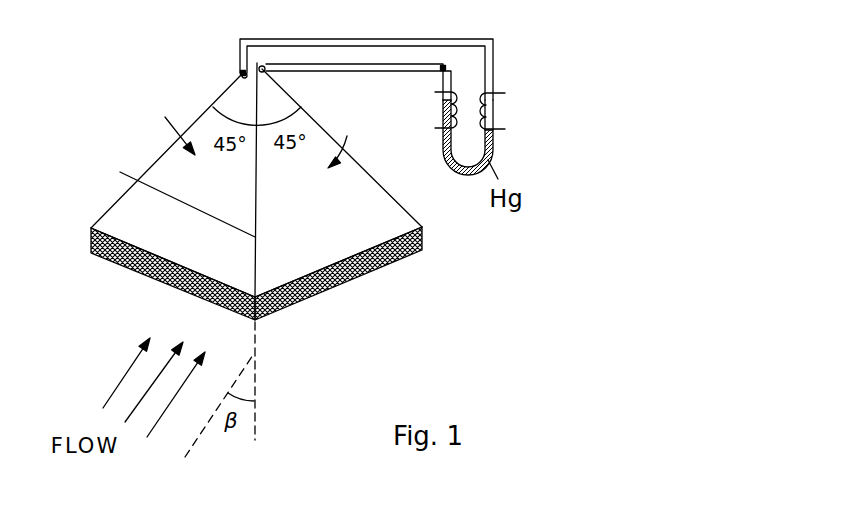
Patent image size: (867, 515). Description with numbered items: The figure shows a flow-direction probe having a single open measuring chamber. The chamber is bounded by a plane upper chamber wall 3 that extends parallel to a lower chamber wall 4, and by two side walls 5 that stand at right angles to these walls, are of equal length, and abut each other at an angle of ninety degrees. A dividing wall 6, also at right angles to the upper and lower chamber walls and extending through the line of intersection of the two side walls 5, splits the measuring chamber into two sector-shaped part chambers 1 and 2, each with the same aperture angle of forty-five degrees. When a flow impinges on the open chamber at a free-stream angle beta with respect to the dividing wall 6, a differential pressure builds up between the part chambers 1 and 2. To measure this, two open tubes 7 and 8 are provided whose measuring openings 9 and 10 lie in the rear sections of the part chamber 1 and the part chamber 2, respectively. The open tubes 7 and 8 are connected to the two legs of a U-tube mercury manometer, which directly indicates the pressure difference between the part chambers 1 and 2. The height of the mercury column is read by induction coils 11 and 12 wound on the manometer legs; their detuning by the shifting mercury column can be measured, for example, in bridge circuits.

The part chamber 1 is at (171, 120).
The part chamber 2 is at (342, 138).
The upper chamber wall 3 is at (168, 167).
The lower chamber wall 4 is at (378, 268).
The side walls 5 is at (90, 240).
The dividing wall 6 is at (179, 190).
The open tube 7 is at (340, 41).
The open tube 8 is at (396, 71).
The measuring opening 9 is at (241, 69).
The measuring opening 10 is at (268, 71).
The induction coil 11 is at (437, 128).
The induction coil 12 is at (502, 128).